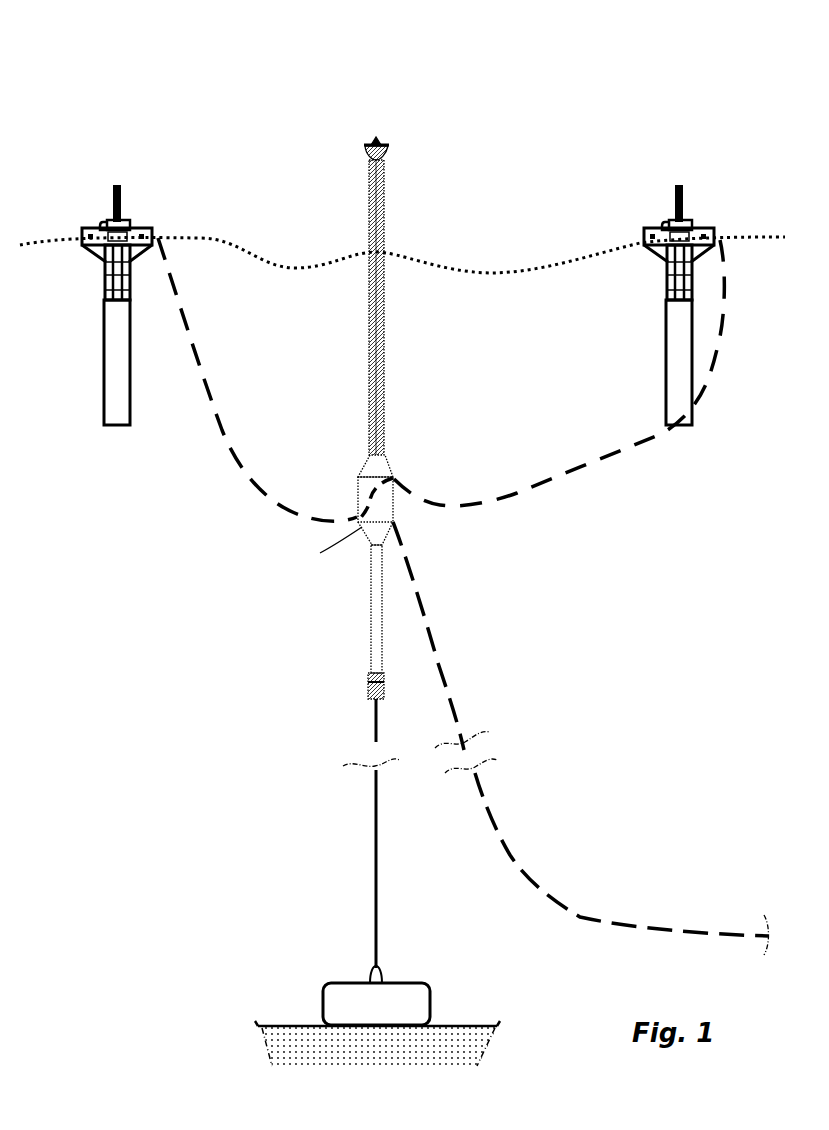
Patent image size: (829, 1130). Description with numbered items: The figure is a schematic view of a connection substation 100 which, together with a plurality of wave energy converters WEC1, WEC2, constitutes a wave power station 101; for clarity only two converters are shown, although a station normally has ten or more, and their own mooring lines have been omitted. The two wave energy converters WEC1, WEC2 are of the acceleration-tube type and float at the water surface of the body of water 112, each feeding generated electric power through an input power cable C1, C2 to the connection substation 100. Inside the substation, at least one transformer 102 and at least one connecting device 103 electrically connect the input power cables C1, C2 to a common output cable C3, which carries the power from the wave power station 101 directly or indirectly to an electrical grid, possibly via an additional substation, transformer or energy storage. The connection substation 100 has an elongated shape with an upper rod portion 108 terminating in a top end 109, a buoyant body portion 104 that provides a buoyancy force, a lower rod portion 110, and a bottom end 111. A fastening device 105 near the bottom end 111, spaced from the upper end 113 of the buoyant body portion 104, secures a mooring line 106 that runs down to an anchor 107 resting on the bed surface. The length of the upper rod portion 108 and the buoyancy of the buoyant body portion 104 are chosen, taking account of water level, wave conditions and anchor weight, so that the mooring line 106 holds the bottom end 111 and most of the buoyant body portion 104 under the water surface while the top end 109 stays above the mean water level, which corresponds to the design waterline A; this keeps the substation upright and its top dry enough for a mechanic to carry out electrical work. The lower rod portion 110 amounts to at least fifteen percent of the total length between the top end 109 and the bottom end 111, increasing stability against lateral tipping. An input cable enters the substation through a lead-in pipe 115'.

The wave power station 101 is at (251, 91).
The connection substation 100 is at (400, 120).
The top end 109 is at (353, 151).
The connecting device 103 is at (403, 143).
The design waterline A is at (433, 248).
The body of water 112 is at (520, 270).
The upper rod portion 108 is at (360, 339).
The lead-in pipe 115' is at (415, 328).
The upper end of the buoyant body portion 113 is at (369, 462).
The transformer 102 is at (385, 455).
The buoyant body portion 104 is at (344, 489).
The input power cable C1 is at (217, 423).
The input power cable C2 is at (606, 459).
The common output cable C3 is at (440, 668).
The lower rod portion 110 is at (350, 603).
The fastening device 105 is at (349, 694).
The bottom end 111 is at (372, 684).
The mooring line 106 is at (342, 833).
The anchor 107 is at (320, 983).
The wave energy converter WEC1 is at (97, 186).
The wave energy converter WEC2 is at (699, 180).